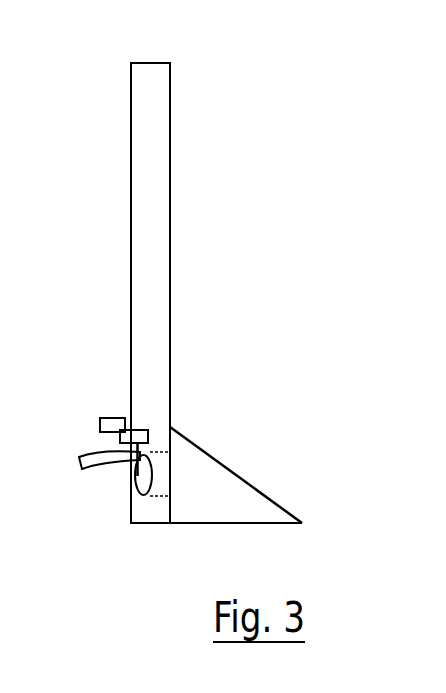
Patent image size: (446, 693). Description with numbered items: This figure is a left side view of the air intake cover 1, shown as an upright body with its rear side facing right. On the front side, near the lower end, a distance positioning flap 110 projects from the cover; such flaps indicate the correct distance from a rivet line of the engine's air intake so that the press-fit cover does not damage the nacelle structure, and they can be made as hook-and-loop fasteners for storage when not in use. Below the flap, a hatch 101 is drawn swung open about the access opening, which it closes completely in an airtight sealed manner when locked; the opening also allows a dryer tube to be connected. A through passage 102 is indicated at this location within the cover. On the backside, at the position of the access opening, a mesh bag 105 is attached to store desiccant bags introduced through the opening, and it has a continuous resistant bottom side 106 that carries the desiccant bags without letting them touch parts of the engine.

The air intake cover 1 is at (192, 58).
The distance positioning flap 110 is at (113, 422).
The hatch 101 is at (88, 471).
The through passage 102 is at (153, 462).
The mesh bag 105 is at (234, 467).
The resistant bottom side 106 is at (225, 526).